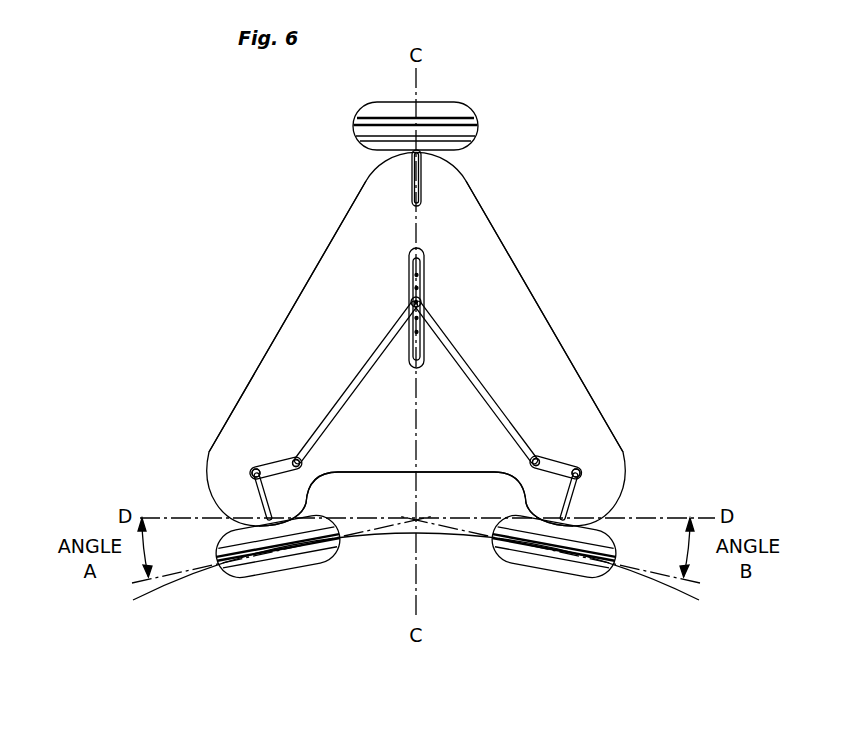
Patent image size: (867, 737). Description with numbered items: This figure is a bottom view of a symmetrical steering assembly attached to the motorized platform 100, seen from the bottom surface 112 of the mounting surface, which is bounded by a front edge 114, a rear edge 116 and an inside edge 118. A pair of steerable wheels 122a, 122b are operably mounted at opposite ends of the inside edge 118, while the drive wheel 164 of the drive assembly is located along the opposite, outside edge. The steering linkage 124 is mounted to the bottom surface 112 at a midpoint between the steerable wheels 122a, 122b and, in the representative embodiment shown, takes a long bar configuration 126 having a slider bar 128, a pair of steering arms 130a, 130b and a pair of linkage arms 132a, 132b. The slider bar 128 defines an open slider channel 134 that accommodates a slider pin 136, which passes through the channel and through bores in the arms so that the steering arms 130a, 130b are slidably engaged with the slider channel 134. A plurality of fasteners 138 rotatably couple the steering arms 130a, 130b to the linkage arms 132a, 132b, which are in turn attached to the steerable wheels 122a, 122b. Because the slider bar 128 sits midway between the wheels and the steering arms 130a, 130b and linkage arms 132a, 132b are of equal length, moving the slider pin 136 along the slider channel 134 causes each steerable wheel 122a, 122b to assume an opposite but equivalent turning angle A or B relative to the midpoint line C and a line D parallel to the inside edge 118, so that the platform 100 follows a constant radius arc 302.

The motorized platform 100 is at (245, 220).
The bottom surface 112 is at (355, 238).
The front edge 114 is at (287, 317).
The rear edge 116 is at (508, 257).
The inside edge 118 is at (353, 472).
The steerable wheel 122a is at (240, 583).
The steerable wheel 122b is at (570, 580).
The steering linkage 124 is at (467, 355).
The long bar configuration 126 is at (488, 387).
The slider bar 128 is at (427, 248).
The steering arm 130a is at (340, 388).
The steering arm 130b is at (517, 425).
The linkage arm 132a is at (265, 463).
The linkage arm 132b is at (557, 462).
The open slider channel 134 is at (413, 345).
The slider pin 136 is at (423, 297).
The fasteners 138 is at (295, 460).
The drive wheel 164 is at (478, 108).
The constant radius arc 302 is at (672, 588).